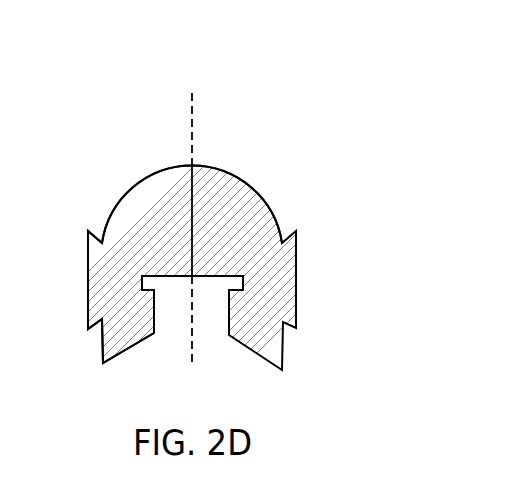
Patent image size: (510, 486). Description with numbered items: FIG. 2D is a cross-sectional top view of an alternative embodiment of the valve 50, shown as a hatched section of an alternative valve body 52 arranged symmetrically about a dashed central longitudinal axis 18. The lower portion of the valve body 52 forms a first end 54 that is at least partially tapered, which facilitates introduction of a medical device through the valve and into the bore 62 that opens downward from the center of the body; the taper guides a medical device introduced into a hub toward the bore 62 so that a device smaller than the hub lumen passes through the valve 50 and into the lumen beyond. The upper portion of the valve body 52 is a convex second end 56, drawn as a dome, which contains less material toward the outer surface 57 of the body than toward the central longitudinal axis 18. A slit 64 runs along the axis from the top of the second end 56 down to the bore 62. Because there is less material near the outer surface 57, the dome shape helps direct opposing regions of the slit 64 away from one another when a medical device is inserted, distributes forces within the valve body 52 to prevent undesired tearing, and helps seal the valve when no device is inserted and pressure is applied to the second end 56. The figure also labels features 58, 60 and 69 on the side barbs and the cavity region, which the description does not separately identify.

The central longitudinal axis 18 is at (193, 121).
The valve 50 is at (258, 153).
The valve body 52 is at (297, 272).
The first end 54 is at (121, 360).
The second end 56 is at (265, 197).
The outer surface 57 is at (88, 260).
The barb 58 is at (100, 238).
The central cavity 60 is at (212, 327).
The bore 62 is at (152, 324).
The slit 64 is at (192, 177).
The inner step 69 is at (246, 288).